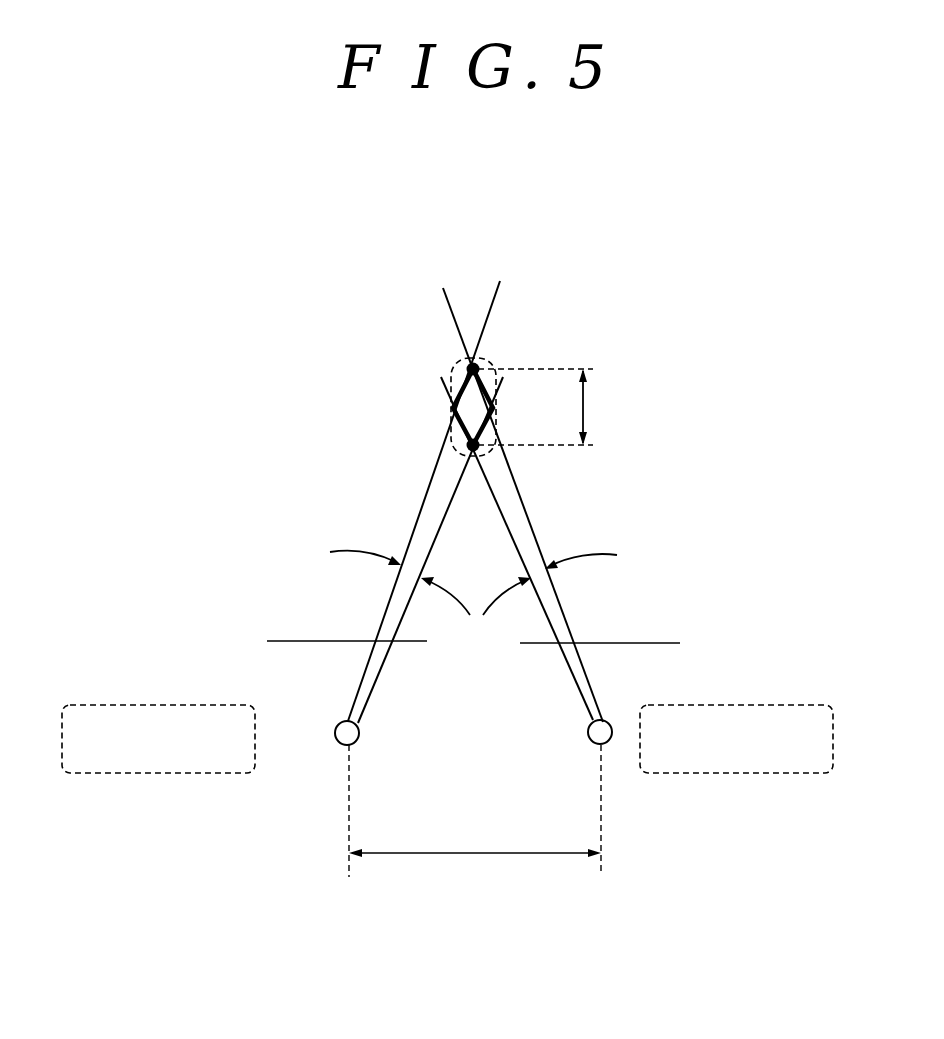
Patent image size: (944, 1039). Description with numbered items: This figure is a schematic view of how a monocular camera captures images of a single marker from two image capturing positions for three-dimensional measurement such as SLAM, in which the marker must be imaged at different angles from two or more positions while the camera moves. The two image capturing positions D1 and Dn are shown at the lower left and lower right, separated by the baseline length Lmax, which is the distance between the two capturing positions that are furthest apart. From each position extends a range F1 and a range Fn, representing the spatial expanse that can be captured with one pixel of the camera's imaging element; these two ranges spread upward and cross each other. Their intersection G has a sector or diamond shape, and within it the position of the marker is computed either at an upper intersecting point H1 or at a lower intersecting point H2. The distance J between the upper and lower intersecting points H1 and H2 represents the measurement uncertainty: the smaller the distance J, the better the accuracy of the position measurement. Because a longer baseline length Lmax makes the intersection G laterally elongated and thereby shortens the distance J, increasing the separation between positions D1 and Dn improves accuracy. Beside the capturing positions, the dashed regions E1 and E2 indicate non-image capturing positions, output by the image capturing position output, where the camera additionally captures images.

The upper intersecting point H1 is at (476, 360).
The lower intersecting point H2 is at (477, 453).
The distance between the upper and lower intersecting points J is at (540, 407).
The intersection G is at (458, 447).
The range where images can be captured with one pixel F1 is at (416, 502).
The range where images can be captured with one pixel Fn is at (529, 505).
The image capturing position D1 is at (338, 745).
The image capturing position Dn is at (597, 748).
The non-image capturing position E1 is at (133, 773).
The non-image capturing position E2 is at (712, 773).
The baseline length Lmax is at (475, 822).